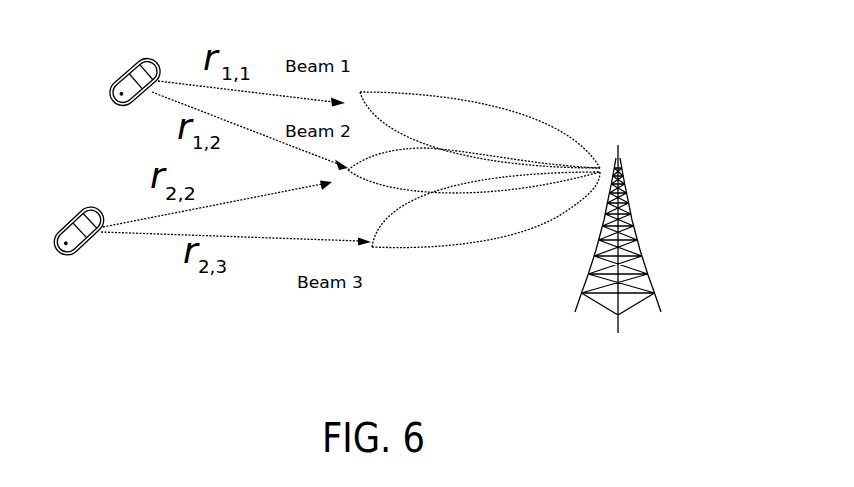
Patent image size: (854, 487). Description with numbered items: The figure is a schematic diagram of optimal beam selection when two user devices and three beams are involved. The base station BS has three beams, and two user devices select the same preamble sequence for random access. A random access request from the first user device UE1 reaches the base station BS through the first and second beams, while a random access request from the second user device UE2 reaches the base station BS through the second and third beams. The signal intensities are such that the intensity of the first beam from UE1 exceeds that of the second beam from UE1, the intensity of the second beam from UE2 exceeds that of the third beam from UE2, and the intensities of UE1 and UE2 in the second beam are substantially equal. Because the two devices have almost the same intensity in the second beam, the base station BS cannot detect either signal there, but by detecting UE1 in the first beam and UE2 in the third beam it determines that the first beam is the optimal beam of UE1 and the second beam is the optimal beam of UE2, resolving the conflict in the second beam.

The first user device UE1 is at (115, 74).
The second user device UE2 is at (79, 252).
The base station BS is at (624, 268).